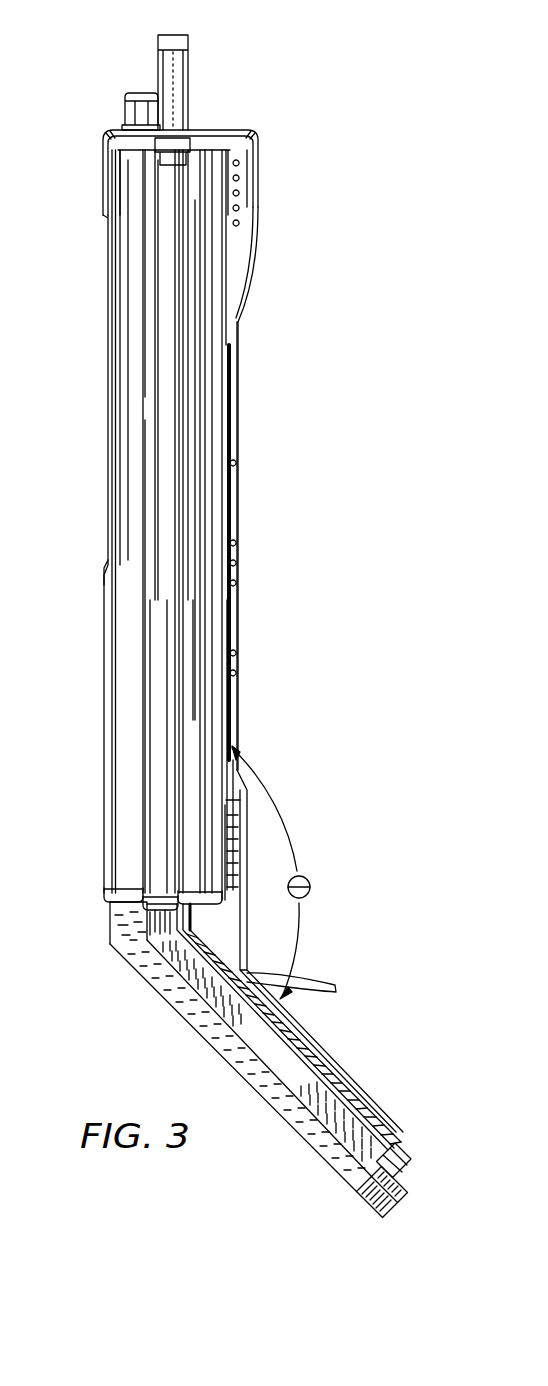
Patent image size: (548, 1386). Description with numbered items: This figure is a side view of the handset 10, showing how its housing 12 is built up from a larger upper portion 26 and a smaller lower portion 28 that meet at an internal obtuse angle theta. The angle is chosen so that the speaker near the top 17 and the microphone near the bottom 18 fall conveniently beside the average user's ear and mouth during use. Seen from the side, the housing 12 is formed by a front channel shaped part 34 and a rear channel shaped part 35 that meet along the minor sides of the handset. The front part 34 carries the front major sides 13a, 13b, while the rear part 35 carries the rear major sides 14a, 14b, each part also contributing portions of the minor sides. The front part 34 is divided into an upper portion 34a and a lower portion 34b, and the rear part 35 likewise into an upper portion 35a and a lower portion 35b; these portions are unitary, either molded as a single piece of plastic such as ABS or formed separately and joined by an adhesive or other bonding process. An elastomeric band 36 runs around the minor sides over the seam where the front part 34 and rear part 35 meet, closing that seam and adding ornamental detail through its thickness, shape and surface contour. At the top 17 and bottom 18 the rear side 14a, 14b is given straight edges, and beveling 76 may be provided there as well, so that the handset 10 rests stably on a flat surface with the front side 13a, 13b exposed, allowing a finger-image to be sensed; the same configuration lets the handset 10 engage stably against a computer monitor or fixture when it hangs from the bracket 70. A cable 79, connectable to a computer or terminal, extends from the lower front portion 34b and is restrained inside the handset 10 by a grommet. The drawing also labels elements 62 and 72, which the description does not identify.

The handset 10 is at (281, 316).
The housing 12 is at (190, 392).
The front major side 13a is at (108, 542).
The front major side 13b is at (337, 1160).
The rear major side 14a is at (240, 466).
The rear major side 14b is at (341, 1058).
The top 17 is at (216, 133).
The bottom 18 is at (407, 1218).
The upper portion 26 is at (123, 833).
The lower portion 28 is at (217, 1040).
The front channel shaped part 34 is at (110, 940).
The upper portion of front part 34a is at (104, 793).
The lower portion of front part 34b is at (165, 998).
The rear channel shaped part 35 is at (213, 712).
The upper portion of rear part 35a is at (205, 666).
The lower portion of rear part 35b is at (365, 1103).
The band 36 is at (148, 684).
The frame 62 is at (230, 905).
The bracket 70 is at (170, 36).
The knob 72 is at (128, 96).
The beveling 76 is at (410, 1168).
The cable 79 is at (310, 978).